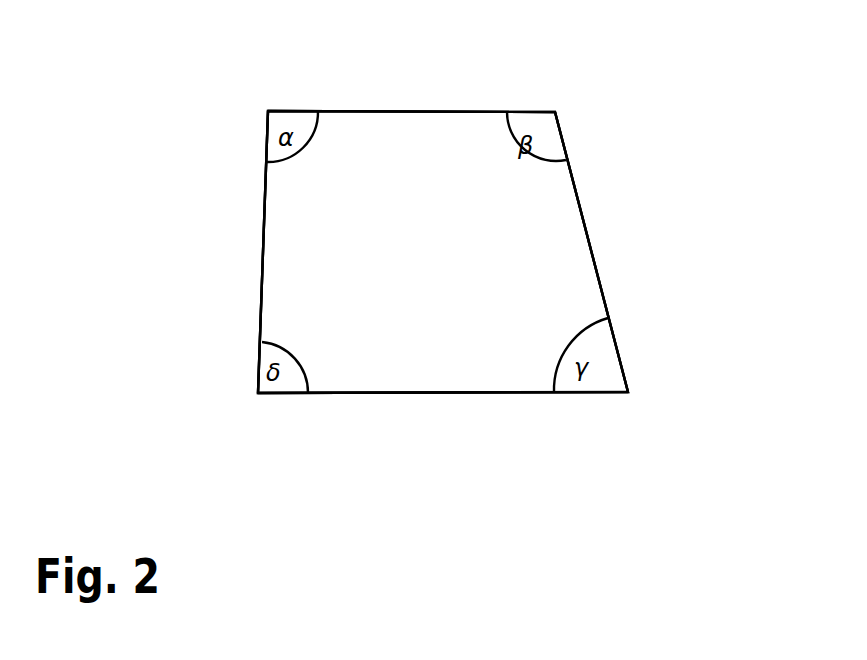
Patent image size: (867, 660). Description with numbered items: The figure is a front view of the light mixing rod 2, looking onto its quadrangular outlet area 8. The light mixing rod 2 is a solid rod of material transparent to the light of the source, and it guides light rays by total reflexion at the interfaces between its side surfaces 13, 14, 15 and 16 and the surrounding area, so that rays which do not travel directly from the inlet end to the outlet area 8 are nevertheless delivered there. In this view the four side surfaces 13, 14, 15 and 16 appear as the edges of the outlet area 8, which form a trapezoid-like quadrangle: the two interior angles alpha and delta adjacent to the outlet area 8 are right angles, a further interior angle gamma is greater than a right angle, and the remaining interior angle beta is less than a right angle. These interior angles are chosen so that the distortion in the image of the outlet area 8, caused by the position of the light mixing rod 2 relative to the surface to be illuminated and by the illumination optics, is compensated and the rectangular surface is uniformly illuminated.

The light mixing rod 2 is at (243, 213).
The outlet area 8 is at (390, 283).
The side surface 13 is at (420, 110).
The side surface 14 is at (591, 250).
The side surface 15 is at (421, 393).
The side surface 16 is at (263, 273).